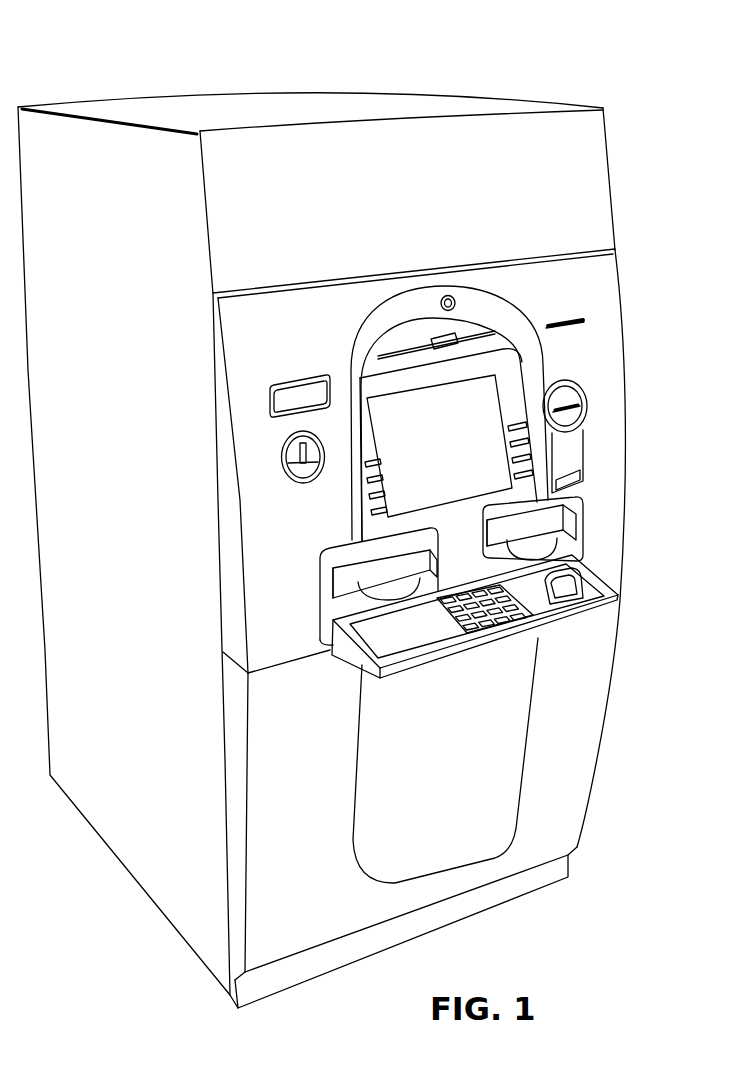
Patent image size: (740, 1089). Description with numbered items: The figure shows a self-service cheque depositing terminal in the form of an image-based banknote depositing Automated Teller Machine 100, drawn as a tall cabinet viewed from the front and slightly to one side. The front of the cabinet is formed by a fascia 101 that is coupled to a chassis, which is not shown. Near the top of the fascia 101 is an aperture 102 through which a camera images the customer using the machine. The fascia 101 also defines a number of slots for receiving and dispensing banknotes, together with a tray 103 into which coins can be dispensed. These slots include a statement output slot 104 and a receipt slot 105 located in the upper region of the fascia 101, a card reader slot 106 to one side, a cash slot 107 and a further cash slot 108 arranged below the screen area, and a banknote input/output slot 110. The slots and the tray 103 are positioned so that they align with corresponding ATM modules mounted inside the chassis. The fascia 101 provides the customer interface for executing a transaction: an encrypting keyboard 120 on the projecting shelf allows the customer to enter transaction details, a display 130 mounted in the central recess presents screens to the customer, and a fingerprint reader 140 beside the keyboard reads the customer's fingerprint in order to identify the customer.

The Automated Teller Machine 100 is at (481, 70).
The fascia 101 is at (214, 350).
The aperture 102 is at (452, 297).
The tray 103 is at (293, 455).
The statement output slot 104 is at (475, 333).
The receipt slot 105 is at (580, 318).
The card reader slot 106 is at (584, 409).
The cash slot 107 is at (333, 577).
The further cash slot 108 is at (563, 520).
The banknote input/output slot 110 is at (270, 400).
The encrypting keyboard 120 is at (530, 608).
The display 130 is at (497, 373).
The fingerprint reader 140 is at (580, 577).